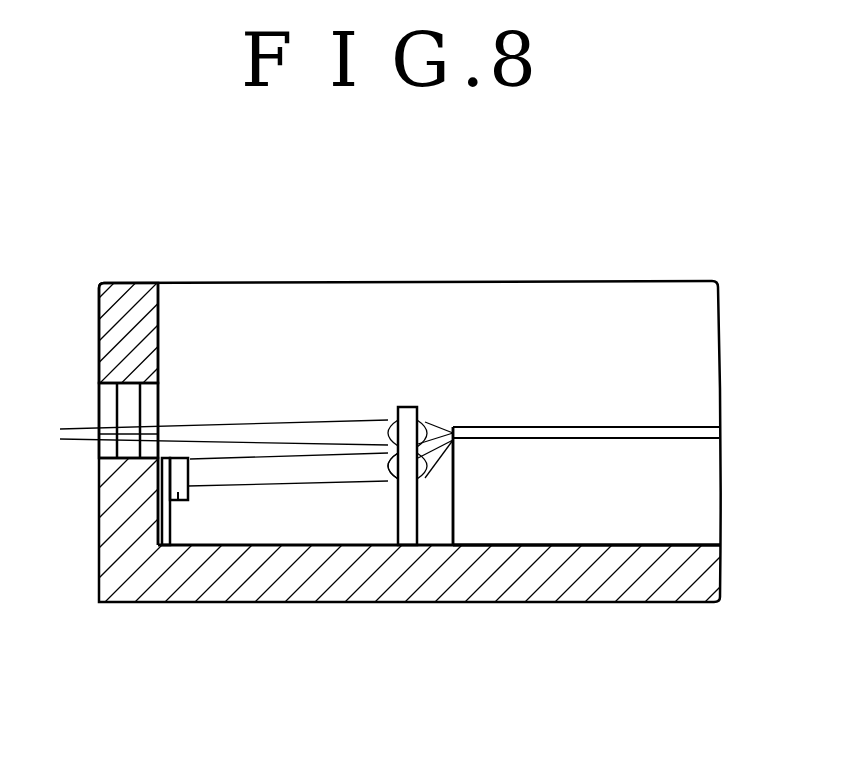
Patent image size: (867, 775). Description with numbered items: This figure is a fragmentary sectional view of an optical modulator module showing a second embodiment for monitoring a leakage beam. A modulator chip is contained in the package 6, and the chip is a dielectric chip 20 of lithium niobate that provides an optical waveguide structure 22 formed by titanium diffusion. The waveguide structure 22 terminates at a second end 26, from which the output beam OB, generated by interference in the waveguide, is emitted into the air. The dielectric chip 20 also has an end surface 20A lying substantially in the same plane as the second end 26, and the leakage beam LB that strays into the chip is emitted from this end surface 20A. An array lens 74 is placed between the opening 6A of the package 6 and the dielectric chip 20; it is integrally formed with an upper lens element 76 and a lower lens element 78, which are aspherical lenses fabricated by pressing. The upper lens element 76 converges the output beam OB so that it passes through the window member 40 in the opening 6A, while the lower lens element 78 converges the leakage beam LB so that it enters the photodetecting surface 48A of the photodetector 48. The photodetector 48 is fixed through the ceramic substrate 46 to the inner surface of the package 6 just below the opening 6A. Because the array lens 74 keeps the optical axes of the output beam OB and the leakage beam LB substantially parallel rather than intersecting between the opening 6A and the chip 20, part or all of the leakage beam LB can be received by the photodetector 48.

The package 6 is at (293, 605).
The opening 6A is at (99, 385).
The dielectric chip 20 is at (706, 482).
The end surface 20A is at (450, 505).
The optical waveguide structure 22 is at (621, 428).
The second end 26 is at (450, 428).
The window member 40 is at (122, 412).
The ceramic substrate 46 is at (157, 540).
The photodetector 48 is at (174, 500).
The photodetecting surface 48A is at (190, 458).
The array lens 74 is at (413, 406).
The upper lens element 76 is at (390, 427).
The lower lens element 78 is at (389, 470).
The output beam OB is at (240, 448).
The leakage beam LB is at (311, 490).